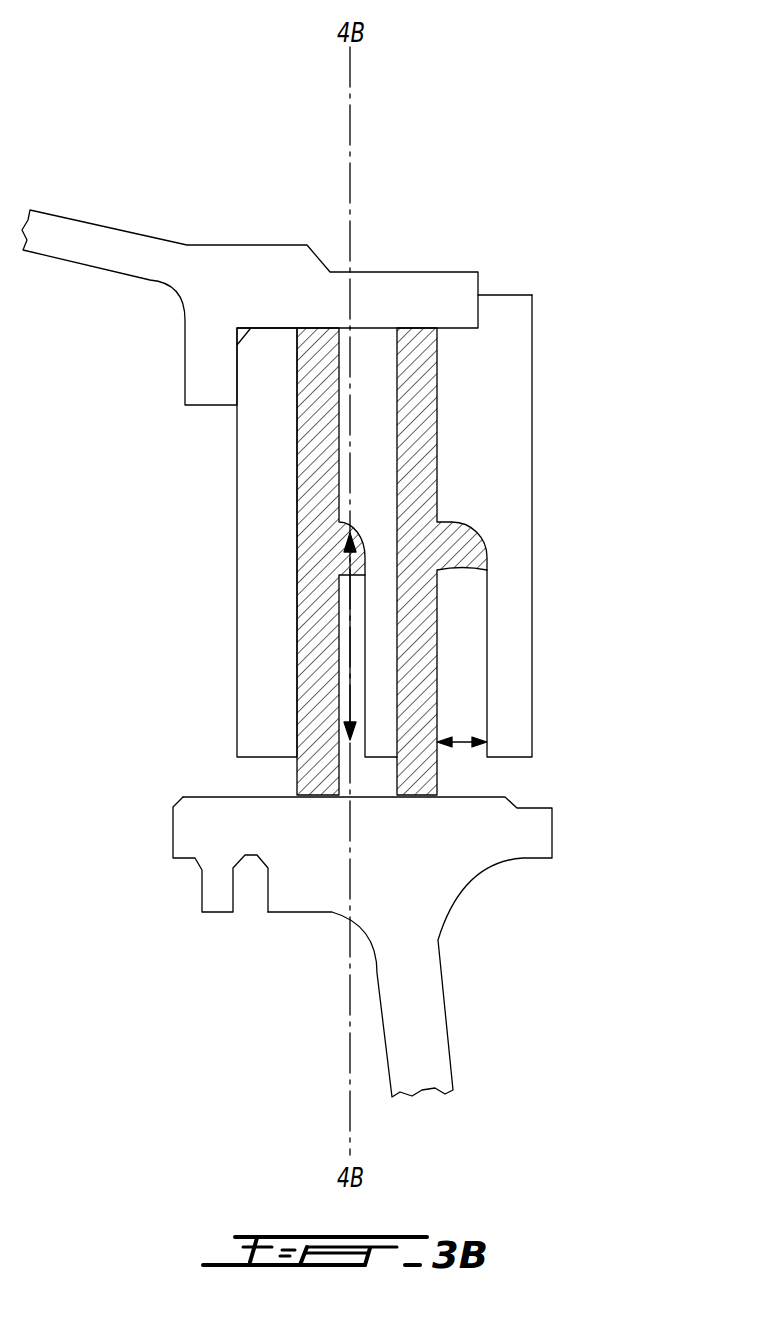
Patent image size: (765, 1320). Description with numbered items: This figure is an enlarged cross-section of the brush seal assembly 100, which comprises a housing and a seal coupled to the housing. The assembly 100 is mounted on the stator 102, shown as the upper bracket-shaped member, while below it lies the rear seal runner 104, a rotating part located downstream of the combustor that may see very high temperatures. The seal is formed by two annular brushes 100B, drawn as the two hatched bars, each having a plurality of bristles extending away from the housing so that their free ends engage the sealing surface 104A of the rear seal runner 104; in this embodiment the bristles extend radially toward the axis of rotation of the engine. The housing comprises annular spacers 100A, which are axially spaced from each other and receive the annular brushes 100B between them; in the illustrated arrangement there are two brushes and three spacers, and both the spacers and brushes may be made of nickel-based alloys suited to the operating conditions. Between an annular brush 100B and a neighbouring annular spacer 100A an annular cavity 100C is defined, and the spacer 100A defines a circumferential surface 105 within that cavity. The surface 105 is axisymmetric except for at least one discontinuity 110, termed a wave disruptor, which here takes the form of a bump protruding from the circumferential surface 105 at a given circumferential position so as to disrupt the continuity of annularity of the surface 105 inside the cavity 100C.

The brush seal assembly 100 is at (585, 196).
The stator 102 is at (292, 270).
The rear seal runner 104 is at (448, 865).
The sealing surface 104A is at (208, 797).
The annular spacer 100A is at (257, 643).
The annular brush 100B is at (318, 777).
The annular cavity 100C is at (352, 621).
The circumferential surface 105 is at (446, 531).
The discontinuity (wave disruptor) 110 is at (358, 534).